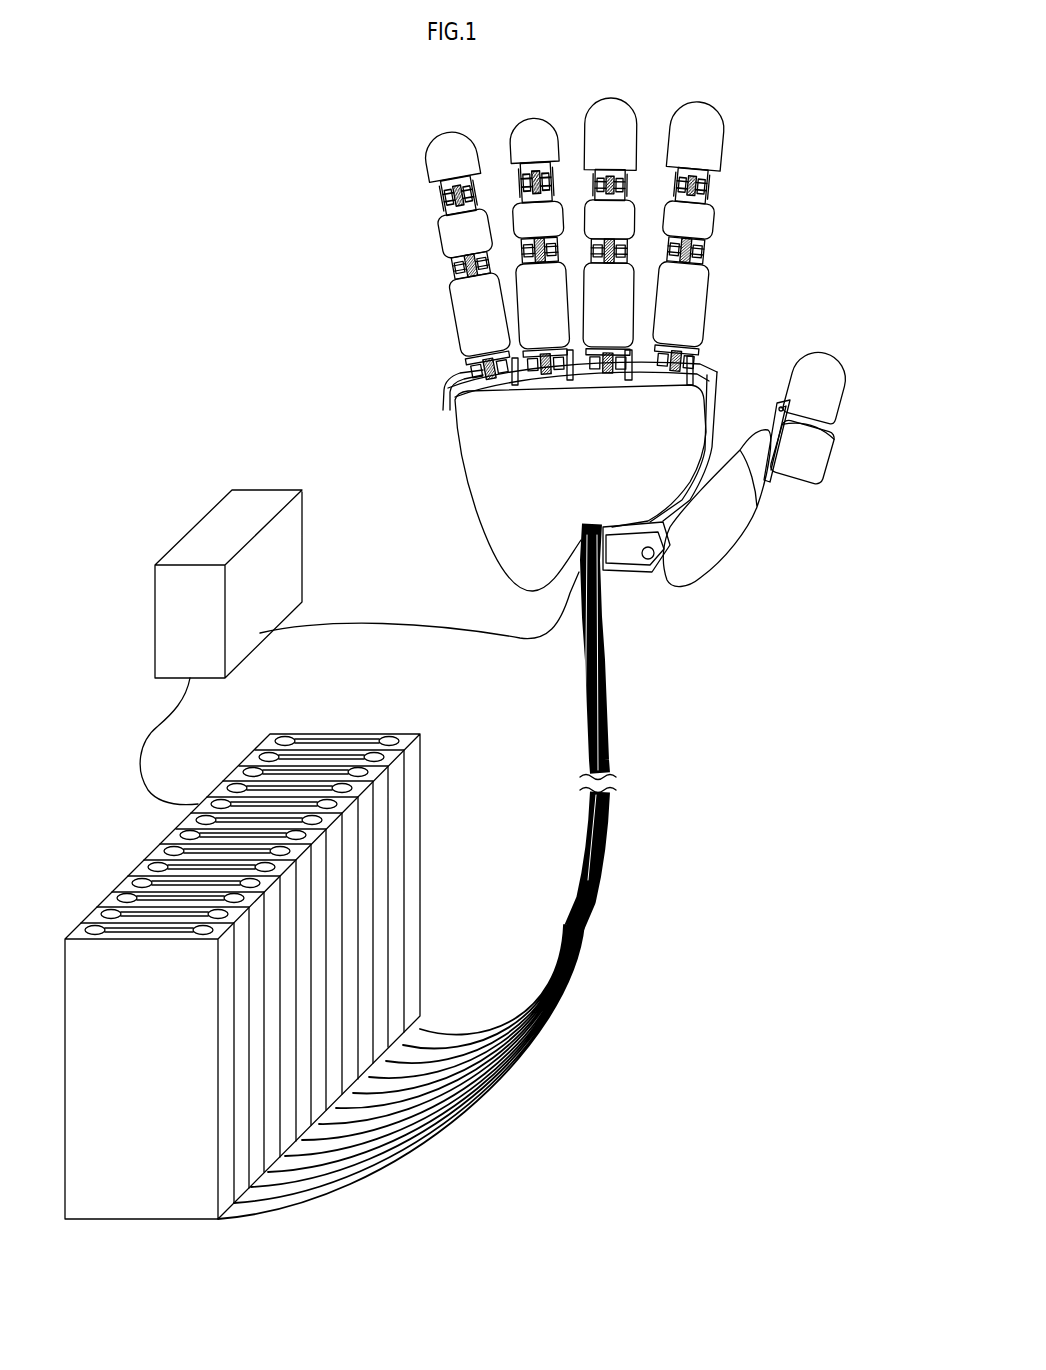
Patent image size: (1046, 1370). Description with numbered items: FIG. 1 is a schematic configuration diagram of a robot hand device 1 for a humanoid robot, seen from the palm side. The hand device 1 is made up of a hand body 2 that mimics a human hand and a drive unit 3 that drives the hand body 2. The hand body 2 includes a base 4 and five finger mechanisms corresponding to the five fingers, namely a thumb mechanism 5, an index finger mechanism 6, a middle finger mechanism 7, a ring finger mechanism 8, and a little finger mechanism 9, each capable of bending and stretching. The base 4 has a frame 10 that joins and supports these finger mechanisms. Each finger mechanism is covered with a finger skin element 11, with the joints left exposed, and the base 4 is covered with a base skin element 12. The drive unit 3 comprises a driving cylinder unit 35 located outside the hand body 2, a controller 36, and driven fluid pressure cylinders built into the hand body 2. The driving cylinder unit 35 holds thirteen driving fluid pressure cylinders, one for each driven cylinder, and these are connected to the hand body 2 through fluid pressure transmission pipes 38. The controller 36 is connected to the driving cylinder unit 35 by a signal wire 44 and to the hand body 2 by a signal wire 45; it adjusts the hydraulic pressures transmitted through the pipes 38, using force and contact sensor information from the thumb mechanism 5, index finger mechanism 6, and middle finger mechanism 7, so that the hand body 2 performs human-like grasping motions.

The hand device 1 is at (228, 146).
The hand body 2 is at (396, 279).
The drive unit 3 is at (540, 1064).
The base 4 is at (436, 433).
The thumb mechanism 5 is at (836, 344).
The index finger mechanism 6 is at (706, 92).
The middle finger mechanism 7 is at (613, 88).
The ring finger mechanism 8 is at (530, 106).
The little finger mechanism 9 is at (436, 122).
The frame 10 is at (720, 386).
The finger skin element 11 is at (693, 283).
The base skin element 12 is at (493, 523).
The driving cylinder unit 35 is at (122, 1234).
The controller 36 is at (162, 626).
The fluid pressure transmission pipes 38 is at (602, 870).
The signal wire 44 is at (143, 736).
The signal wire 45 is at (387, 622).